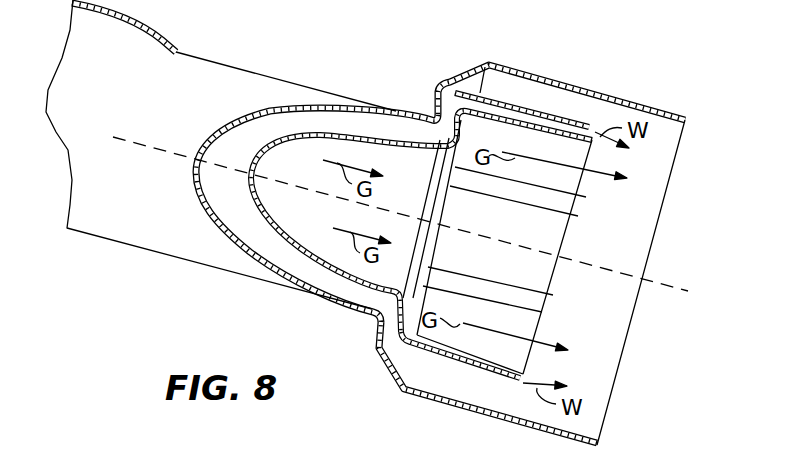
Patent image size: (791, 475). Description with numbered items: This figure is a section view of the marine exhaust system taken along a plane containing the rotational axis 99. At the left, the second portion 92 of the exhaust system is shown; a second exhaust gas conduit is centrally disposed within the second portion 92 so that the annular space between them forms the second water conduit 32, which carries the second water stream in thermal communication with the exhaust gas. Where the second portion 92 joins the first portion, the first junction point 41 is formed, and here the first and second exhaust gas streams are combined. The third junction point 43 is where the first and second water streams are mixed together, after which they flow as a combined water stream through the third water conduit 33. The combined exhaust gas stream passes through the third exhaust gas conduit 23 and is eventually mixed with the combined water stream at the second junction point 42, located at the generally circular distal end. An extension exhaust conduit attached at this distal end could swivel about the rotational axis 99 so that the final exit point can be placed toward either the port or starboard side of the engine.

The second portion 92 is at (221, 80).
The second water conduit 32 is at (228, 150).
The third junction point 43 is at (240, 178).
The first junction point 41 is at (277, 198).
The third water conduit 33 is at (539, 122).
The second junction point 42 is at (661, 174).
The third exhaust gas conduit 23 is at (505, 228).
The rotational axis 99 is at (677, 295).